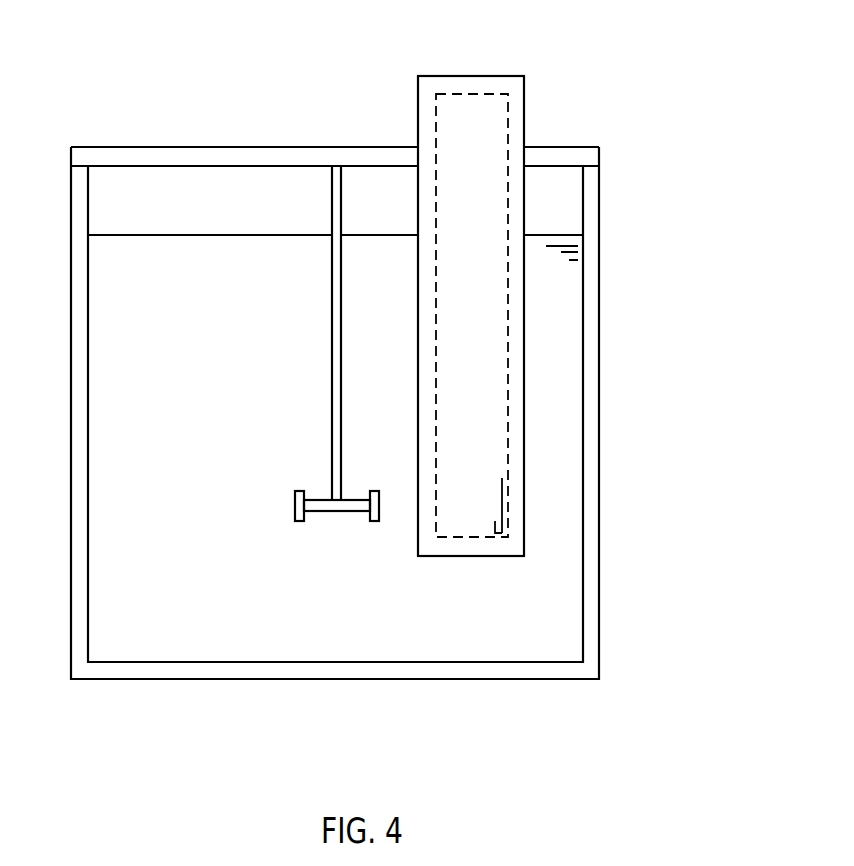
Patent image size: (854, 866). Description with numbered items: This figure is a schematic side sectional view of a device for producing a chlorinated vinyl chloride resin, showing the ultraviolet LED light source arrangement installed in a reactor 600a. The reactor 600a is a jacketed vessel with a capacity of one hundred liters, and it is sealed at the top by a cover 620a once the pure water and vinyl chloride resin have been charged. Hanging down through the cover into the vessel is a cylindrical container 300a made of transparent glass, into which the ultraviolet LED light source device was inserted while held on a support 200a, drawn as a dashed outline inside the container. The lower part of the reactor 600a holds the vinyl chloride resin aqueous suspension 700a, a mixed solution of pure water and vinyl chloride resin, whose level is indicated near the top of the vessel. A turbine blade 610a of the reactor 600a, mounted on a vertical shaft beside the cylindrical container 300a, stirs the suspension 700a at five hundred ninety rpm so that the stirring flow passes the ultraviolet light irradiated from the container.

The reactor 600a is at (594, 207).
The cover 620a is at (194, 157).
The cylindrical container 300a is at (468, 83).
The support 200a is at (484, 115).
The turbine blade 610a is at (345, 508).
The vinyl chloride resin aqueous suspension 700a is at (175, 622).